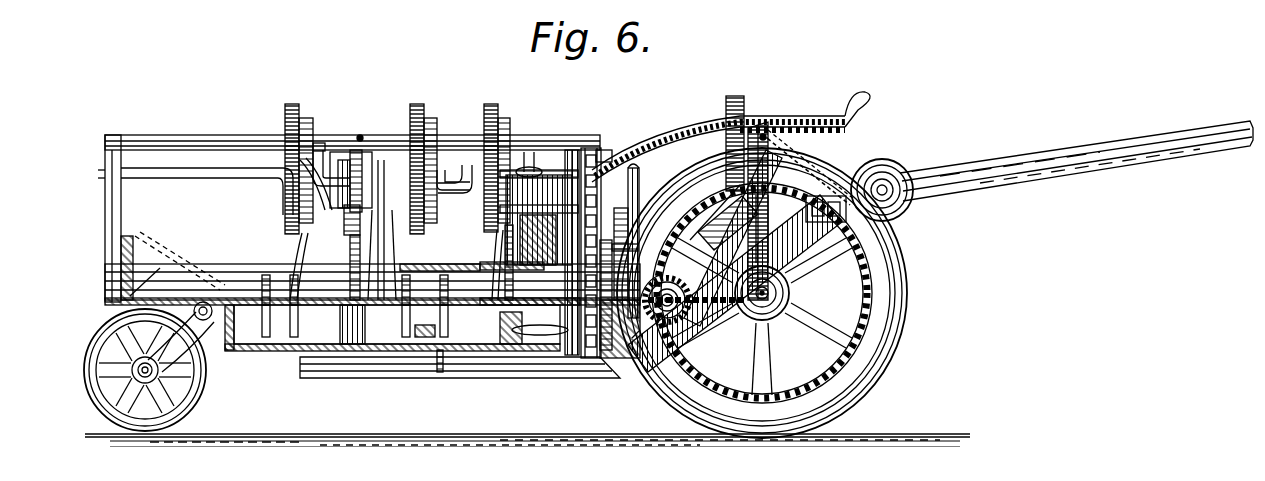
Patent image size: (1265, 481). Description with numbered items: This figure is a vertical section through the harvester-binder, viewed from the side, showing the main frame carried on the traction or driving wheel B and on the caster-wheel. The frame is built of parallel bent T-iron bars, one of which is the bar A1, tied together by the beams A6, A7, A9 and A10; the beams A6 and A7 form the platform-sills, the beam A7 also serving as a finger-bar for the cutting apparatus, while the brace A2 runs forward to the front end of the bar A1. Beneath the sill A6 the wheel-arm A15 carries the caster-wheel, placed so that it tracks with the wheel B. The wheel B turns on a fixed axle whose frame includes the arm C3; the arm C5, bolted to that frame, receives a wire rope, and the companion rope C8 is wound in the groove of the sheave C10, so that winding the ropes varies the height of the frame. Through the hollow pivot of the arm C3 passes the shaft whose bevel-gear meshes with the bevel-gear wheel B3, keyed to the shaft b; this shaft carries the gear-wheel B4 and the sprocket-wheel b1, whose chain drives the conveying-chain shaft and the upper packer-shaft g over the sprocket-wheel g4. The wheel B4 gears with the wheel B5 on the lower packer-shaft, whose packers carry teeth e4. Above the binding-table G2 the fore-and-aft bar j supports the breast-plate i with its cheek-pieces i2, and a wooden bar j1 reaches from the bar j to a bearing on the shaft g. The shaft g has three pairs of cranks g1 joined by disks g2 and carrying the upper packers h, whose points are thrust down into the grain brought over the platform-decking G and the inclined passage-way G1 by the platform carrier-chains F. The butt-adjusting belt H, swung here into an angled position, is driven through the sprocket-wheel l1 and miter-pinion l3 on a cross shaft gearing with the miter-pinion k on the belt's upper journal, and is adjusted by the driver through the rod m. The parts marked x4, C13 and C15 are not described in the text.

The main drive wheel B is at (762, 293).
The wheel-arm A15 is at (149, 366).
The bar j is at (213, 137).
The upper packer-shaft g is at (232, 174).
The platform-decking G is at (372, 284).
The inclined passage-way G1 is at (185, 266).
The binding-table G2 is at (235, 300).
The beam A6 is at (392, 326).
The beam A7 is at (460, 376).
The beam A10 is at (406, 362).
The parallel bar A1 is at (438, 381).
The beam A9 is at (560, 365).
The sprocket-wheel b1 is at (579, 386).
The shaft b is at (597, 387).
The gear-wheel B5 is at (628, 360).
The platform carrier-chains F is at (544, 328).
The disk g2 is at (302, 130).
The cranks g1 is at (318, 226).
The upper packers h is at (316, 186).
The miter-pinion k is at (540, 122).
The bar of wood j1 is at (360, 160).
The breast-plate i is at (360, 202).
The cheek-pieces i2 is at (346, 266).
The tooth e4 is at (388, 230).
The butt-adjusting belt H is at (545, 262).
The miter-pinion l3 is at (582, 150).
The sprocket-wheel l1 is at (594, 150).
The sprocket-wheel g4 is at (607, 159).
The gear-wheel B4 is at (628, 244).
The pin x4 is at (625, 245).
The rod m is at (731, 139).
The wire rope C8 is at (801, 211).
The pivot pin C15 is at (784, 135).
The sheave C10 is at (900, 200).
The arm C3 is at (722, 300).
The brace A2 is at (747, 276).
The arm C5 is at (733, 238).
The plate C13 is at (724, 217).
The bevel-gear wheel B3 is at (673, 291).